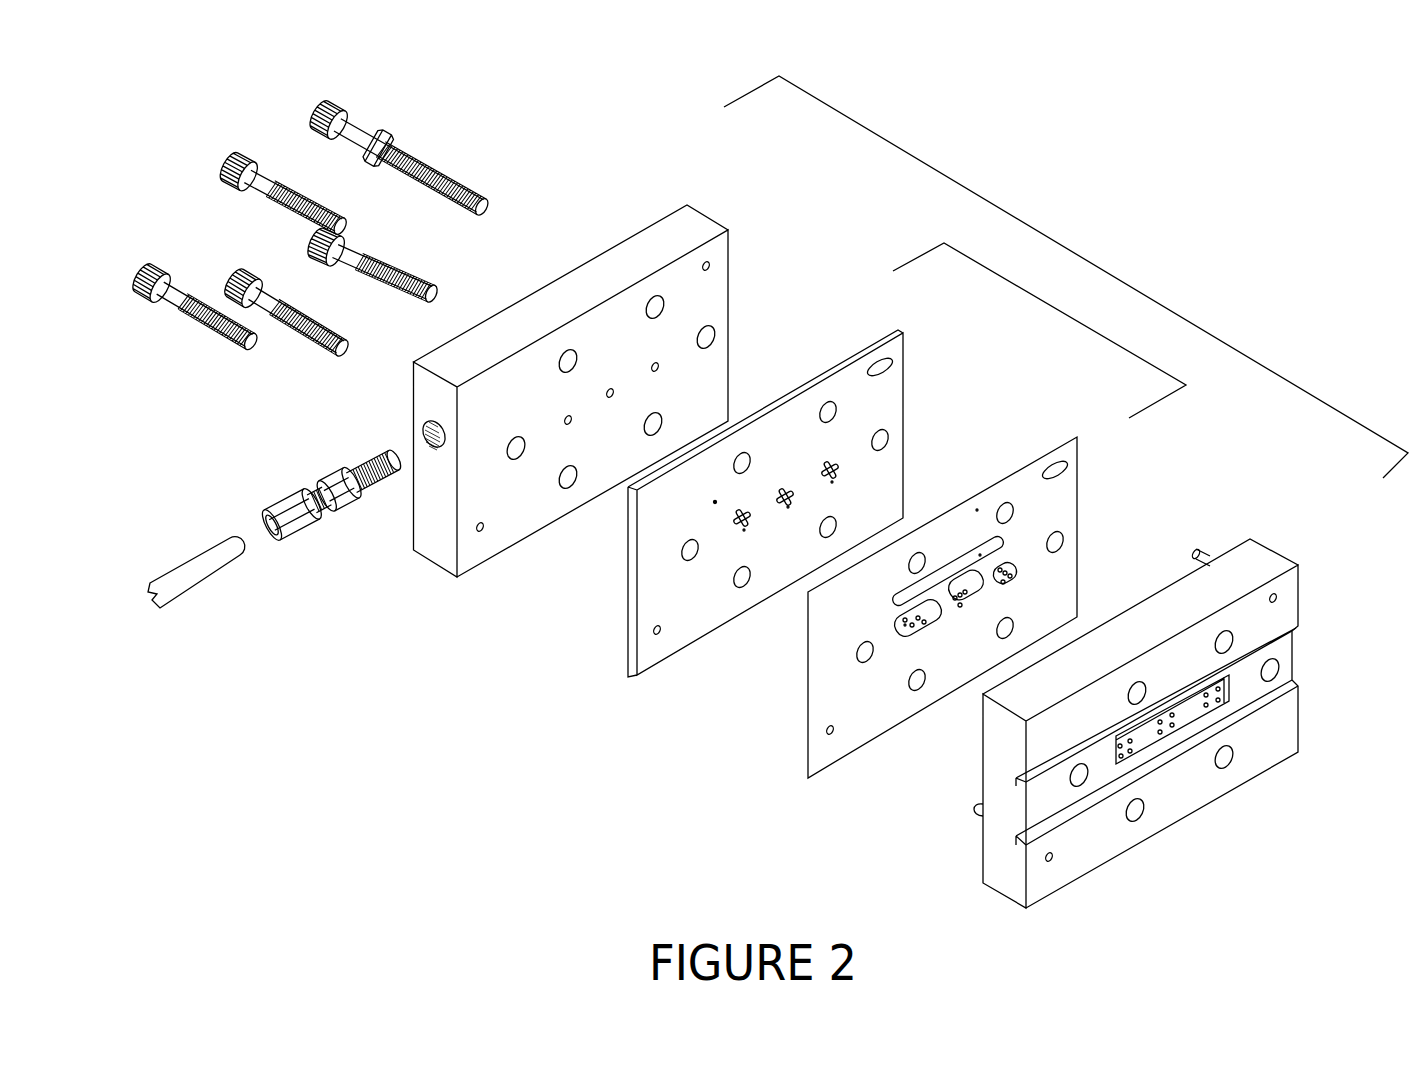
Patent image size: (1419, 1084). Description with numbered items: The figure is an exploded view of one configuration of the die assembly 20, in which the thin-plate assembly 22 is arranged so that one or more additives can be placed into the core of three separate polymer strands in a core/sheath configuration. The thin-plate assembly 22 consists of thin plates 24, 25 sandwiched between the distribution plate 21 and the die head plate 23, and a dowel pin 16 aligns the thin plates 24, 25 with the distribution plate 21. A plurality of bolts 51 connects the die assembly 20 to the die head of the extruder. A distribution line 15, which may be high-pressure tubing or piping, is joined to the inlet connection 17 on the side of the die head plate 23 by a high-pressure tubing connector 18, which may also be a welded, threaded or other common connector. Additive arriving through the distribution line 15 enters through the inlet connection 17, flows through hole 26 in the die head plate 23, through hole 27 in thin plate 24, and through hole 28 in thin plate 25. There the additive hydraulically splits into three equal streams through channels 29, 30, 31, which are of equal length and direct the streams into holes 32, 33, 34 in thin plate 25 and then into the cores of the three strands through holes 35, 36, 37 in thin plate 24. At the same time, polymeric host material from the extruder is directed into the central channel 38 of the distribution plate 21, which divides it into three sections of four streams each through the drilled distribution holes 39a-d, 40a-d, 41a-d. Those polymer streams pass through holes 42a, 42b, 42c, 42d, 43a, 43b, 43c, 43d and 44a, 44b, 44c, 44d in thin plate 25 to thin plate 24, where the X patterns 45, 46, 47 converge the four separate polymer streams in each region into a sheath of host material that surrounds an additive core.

The distribution line 15 is at (220, 573).
The dowel pin 16 is at (1198, 547).
The inlet connection 17 is at (423, 423).
The tubing connector 18 is at (307, 532).
The die assembly 20 is at (1017, 216).
The distribution plate 21 is at (1166, 687).
The thin-plate assembly 22 is at (1031, 296).
The die head plate 23 is at (542, 361).
The thin plate 24 is at (793, 479).
The thin plate 25 is at (939, 575).
The hole 26 is at (540, 400).
The hole 27 is at (715, 502).
The hole 28 is at (893, 603).
The channel 29 is at (893, 605).
The channel 30 is at (920, 613).
The channel 31 is at (977, 510).
The hole 32 is at (905, 625).
The hole 33 is at (980, 555).
The hole 34 is at (1005, 575).
The hole 35 is at (742, 533).
The hole 36 is at (788, 507).
The hole 37 is at (832, 482).
The central channel 38 is at (1231, 687).
The distribution holes 39a-d is at (1126, 757).
The distribution holes 40a-d is at (1170, 733).
The distribution holes 41a-d is at (1217, 705).
The hole 42a is at (903, 620).
The hole 42b is at (912, 623).
The hole 42c is at (918, 621).
The hole 42d is at (922, 625).
The hole 43a is at (955, 596).
The hole 43b is at (960, 593).
The hole 43c is at (967, 595).
The hole 43d is at (960, 607).
The hole 44a is at (1000, 568).
The hole 44b is at (1007, 571).
The hole 44c is at (1012, 577).
The hole 44d is at (1004, 584).
The X pattern 45 is at (750, 510).
The X pattern 46 is at (790, 490).
The X pattern 47 is at (838, 463).
The bolt 51 is at (428, 160).